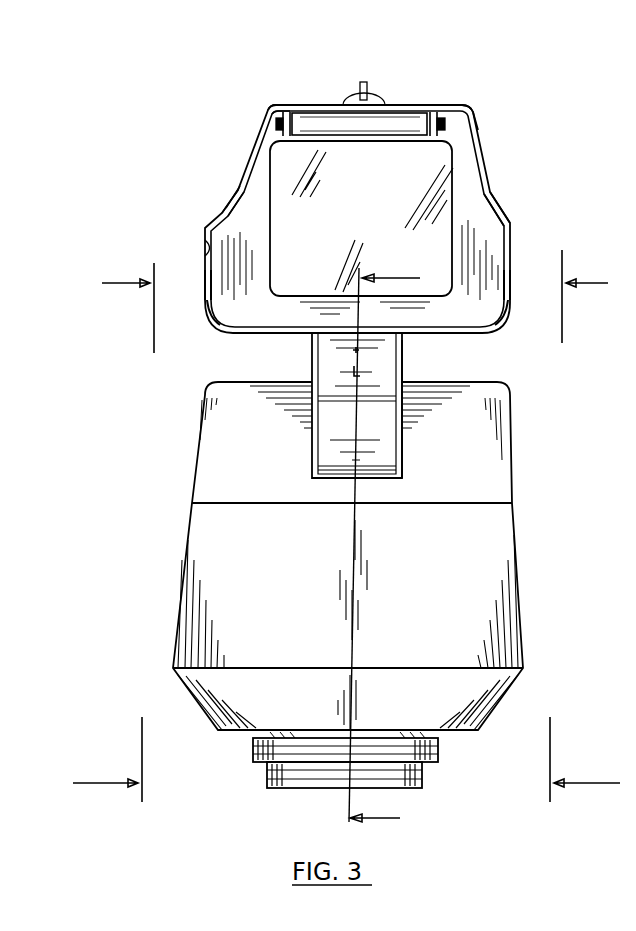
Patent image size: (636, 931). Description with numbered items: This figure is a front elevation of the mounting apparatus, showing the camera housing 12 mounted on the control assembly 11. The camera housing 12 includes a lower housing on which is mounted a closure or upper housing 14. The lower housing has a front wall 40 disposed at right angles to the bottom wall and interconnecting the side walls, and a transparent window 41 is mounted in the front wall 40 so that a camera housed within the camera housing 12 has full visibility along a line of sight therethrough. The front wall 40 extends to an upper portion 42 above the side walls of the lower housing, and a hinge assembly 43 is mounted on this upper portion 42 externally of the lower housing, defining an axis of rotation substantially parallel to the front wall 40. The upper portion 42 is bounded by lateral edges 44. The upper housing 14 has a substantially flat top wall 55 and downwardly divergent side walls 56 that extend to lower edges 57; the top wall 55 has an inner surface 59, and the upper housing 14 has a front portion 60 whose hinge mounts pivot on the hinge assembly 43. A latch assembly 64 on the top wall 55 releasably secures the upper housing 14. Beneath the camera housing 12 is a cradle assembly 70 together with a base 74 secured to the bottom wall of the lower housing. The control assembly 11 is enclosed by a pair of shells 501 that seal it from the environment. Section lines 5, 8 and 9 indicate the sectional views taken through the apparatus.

The control assembly 11 is at (198, 447).
The camera housing 12 is at (480, 140).
The upper housing 14 is at (490, 176).
The front wall 40 is at (470, 250).
The transparent window 41 is at (362, 212).
The upper portion 42 is at (457, 120).
The hinge assembly 43 is at (396, 122).
The lateral edges 44 is at (241, 183).
The top wall 55 is at (272, 106).
The side walls 56 is at (505, 215).
The lower edges 57 is at (207, 305).
The inner surface 59 is at (206, 246).
The front portion 60 is at (258, 118).
The latch assembly 64 is at (368, 84).
The cradle assembly 70 is at (300, 355).
The base 74 is at (402, 358).
The shells 501 is at (268, 595).
The section line 5- 5 is at (393, 549).
The section line 8- 8 is at (101, 532).
The section line 9- 9 is at (589, 526).